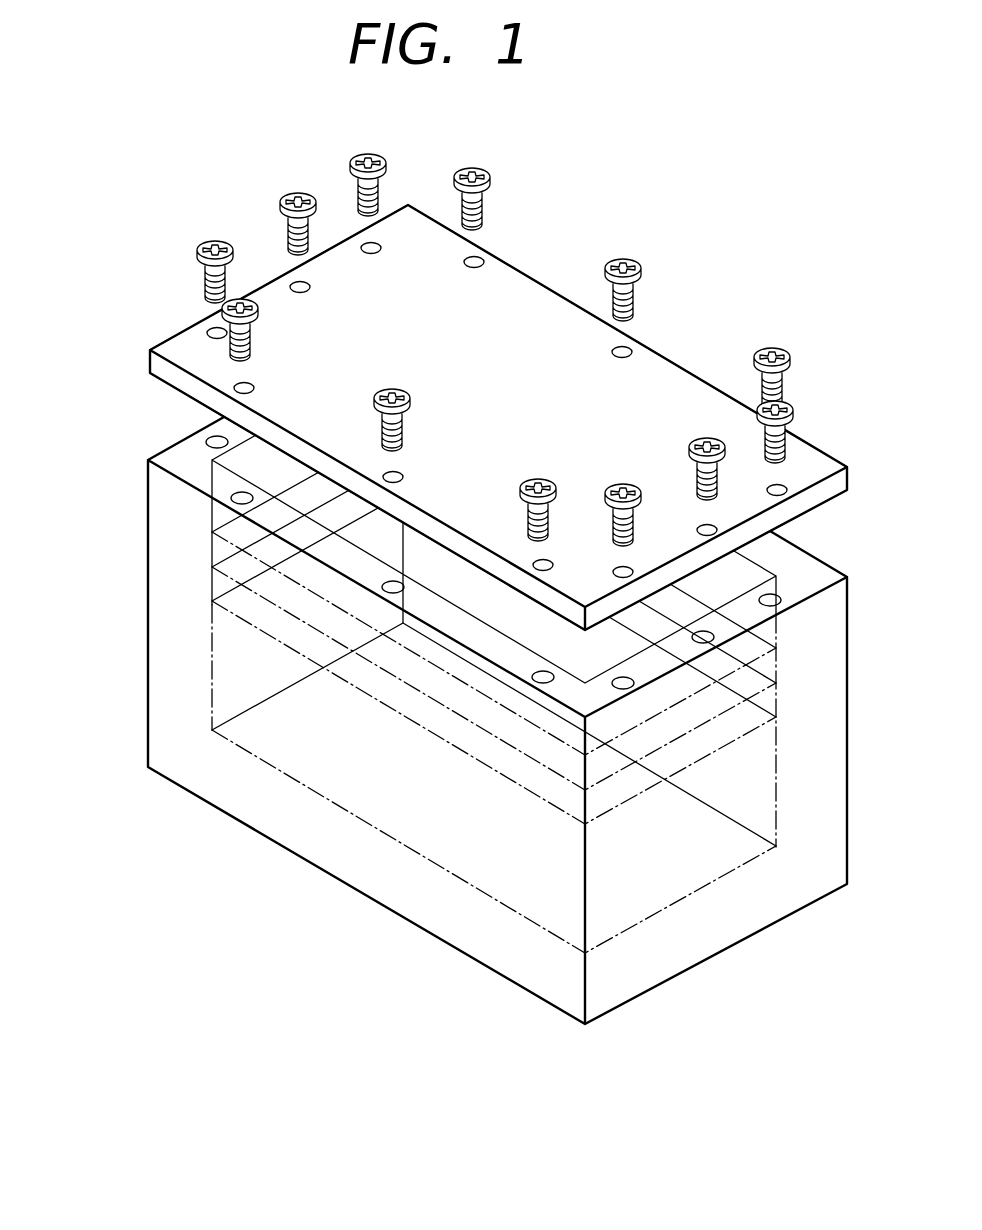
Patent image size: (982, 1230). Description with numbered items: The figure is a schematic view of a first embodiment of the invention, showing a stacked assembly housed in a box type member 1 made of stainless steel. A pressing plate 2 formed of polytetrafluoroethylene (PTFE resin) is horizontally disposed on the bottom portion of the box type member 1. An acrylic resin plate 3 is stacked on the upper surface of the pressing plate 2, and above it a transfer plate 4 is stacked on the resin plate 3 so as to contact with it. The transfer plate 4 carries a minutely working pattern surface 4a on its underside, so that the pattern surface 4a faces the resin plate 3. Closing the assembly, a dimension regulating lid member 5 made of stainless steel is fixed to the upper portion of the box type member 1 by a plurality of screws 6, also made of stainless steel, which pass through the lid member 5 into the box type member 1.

The box type member 1 is at (160, 723).
The pressing plate 2 is at (263, 745).
The acrylic resin plate 3 is at (387, 693).
The minutely working pattern surface 4a is at (467, 727).
The transfer plate 4 is at (548, 753).
The dimension regulating lid member 5 is at (542, 295).
The screws 6 is at (627, 482).